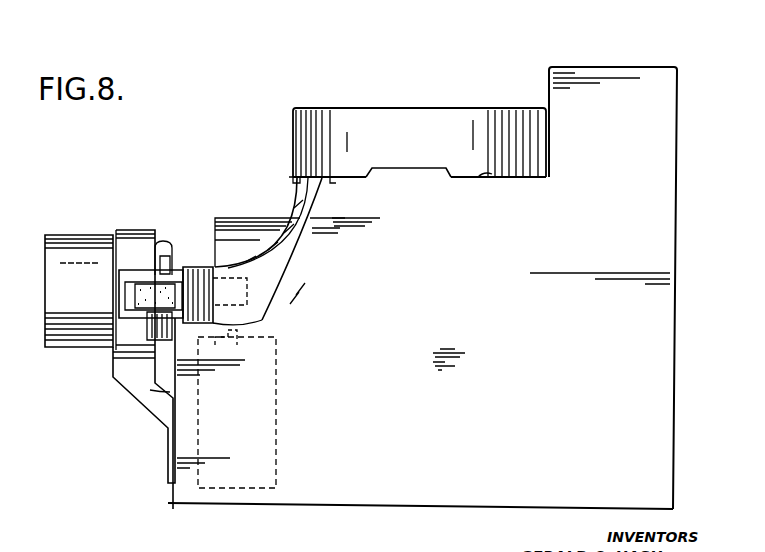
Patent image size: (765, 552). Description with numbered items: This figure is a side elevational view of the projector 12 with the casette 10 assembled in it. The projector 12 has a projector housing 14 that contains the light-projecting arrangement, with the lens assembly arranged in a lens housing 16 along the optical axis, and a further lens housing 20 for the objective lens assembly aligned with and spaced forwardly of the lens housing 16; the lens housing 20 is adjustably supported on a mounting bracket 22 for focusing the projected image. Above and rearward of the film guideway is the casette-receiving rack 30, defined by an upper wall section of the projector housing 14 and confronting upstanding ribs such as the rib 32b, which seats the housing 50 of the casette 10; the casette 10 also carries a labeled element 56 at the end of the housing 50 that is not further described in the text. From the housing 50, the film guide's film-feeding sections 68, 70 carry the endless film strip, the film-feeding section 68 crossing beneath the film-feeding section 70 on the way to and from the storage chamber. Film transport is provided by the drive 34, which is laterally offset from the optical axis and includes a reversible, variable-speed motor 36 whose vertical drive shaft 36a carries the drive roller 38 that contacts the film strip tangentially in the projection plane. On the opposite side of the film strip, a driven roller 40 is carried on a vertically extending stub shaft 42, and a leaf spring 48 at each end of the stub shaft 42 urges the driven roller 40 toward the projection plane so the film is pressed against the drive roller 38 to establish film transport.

The projector 12 is at (646, 71).
The casette 10 is at (449, 112).
The housing 50 is at (409, 121).
The threaded end 56 is at (484, 120).
The upstanding rib 32b is at (424, 178).
The casette-receiving rack 30 is at (487, 180).
The film-feeding section 70 is at (296, 186).
The film-feeding section 68 is at (318, 225).
The drive roller 38 is at (255, 303).
The lens housing 16 is at (236, 222).
The leaf spring 48 is at (171, 270).
The driven roller 40 is at (135, 297).
The stub shaft 42 is at (161, 253).
The lens housing 20 is at (82, 240).
The drive 34 is at (110, 352).
The mounting bracket 22 is at (118, 378).
The motor 36 is at (277, 420).
The drive shaft 36a is at (233, 342).
The projector housing 14 is at (365, 502).